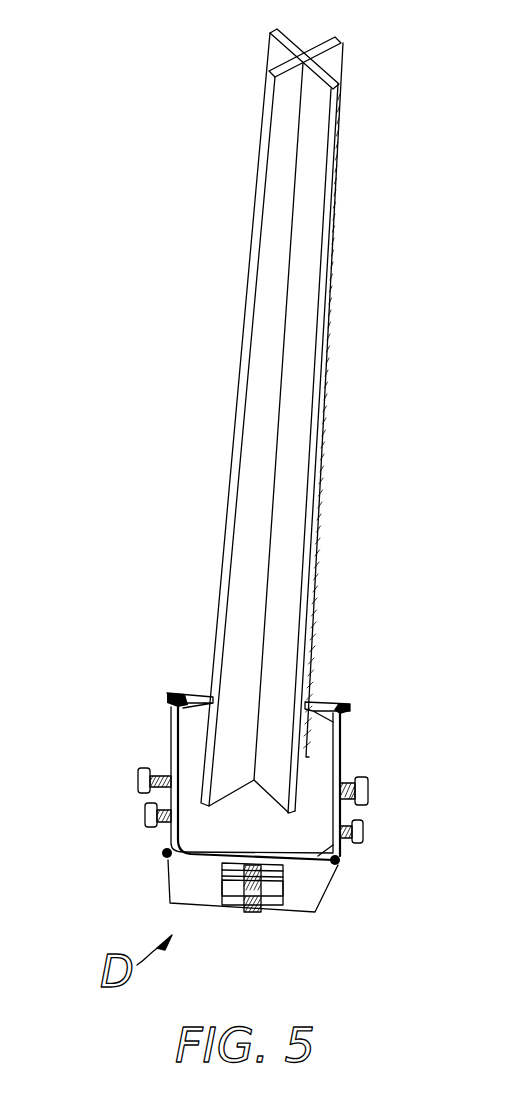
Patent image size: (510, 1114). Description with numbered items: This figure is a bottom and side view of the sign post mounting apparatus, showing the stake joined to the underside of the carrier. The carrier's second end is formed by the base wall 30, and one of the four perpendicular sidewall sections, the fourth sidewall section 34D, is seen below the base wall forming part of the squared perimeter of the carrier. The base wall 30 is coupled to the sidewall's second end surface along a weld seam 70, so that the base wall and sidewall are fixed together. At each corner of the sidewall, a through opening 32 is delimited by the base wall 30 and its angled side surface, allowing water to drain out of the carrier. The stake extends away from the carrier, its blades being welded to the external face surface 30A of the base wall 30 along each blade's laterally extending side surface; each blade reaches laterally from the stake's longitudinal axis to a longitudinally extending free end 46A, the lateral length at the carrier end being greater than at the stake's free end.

The longitudinally extending free end of the blade 46A is at (342, 92).
The external face surface of the base wall 30A is at (307, 757).
The seam 70 is at (171, 727).
The through opening 32 is at (170, 696).
The base wall 30 is at (143, 803).
The fourth sidewall section 34D is at (292, 890).